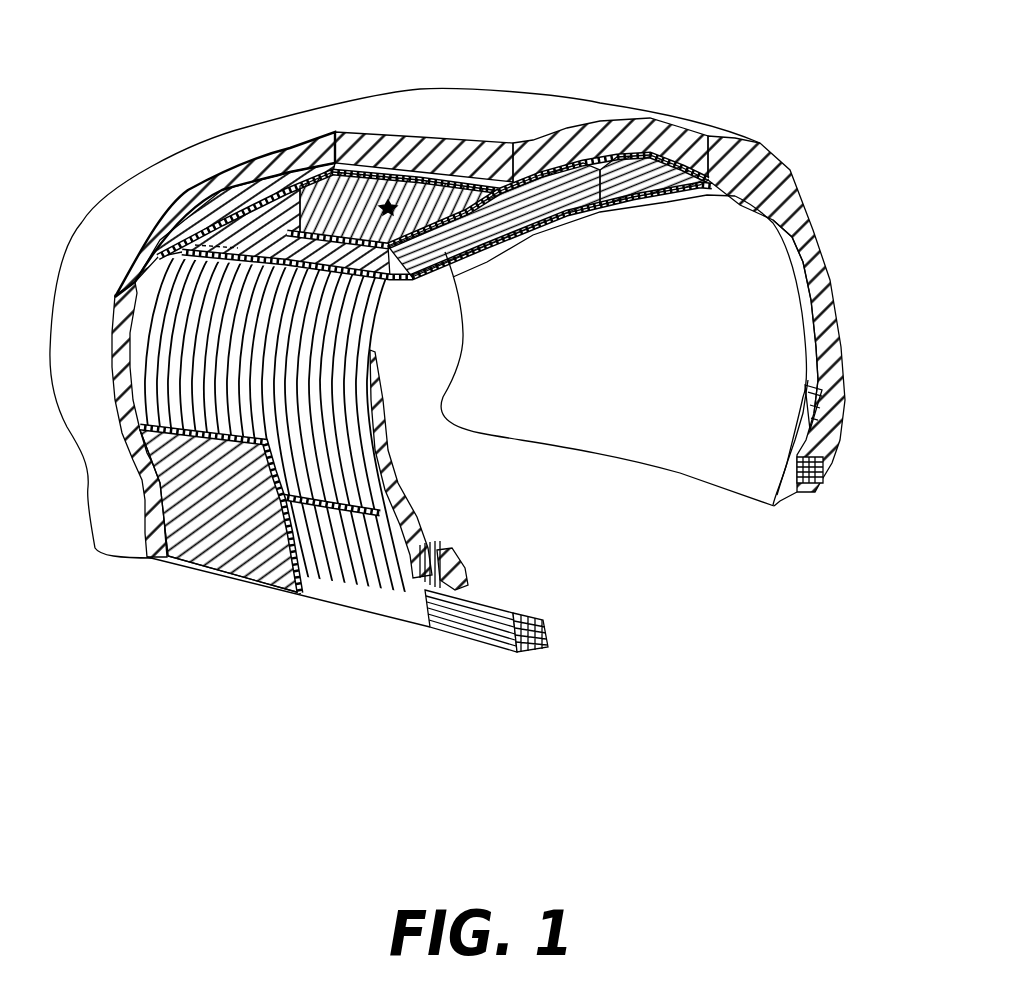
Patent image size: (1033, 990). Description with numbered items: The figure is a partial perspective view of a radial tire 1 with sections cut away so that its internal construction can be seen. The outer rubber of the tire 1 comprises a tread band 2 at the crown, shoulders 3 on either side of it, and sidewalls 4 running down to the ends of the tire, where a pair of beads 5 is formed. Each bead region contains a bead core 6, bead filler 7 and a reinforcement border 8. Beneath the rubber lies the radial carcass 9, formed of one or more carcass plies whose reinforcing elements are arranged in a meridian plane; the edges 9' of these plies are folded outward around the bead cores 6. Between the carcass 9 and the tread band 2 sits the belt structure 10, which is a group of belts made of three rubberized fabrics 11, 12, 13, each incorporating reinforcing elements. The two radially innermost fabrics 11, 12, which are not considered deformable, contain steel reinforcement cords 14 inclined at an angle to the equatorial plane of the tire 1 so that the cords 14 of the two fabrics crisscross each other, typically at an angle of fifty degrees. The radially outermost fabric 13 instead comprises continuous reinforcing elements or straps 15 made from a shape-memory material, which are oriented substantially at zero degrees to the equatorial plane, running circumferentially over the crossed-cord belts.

The tire 1 is at (660, 170).
The tread band 2 is at (557, 110).
The shoulders 3 is at (780, 173).
The sidewalls 4 is at (838, 270).
The beads 5 is at (760, 480).
The bead cores 6 is at (815, 487).
The bead filler 7 is at (850, 375).
The reinforcement borders 8 is at (222, 540).
The radial carcass 9 is at (291, 420).
The edges of the carcass plies 9' is at (504, 520).
The belt structure 10 is at (388, 204).
The first radially innermost fabric 11 is at (533, 200).
The second radially innermost fabric 12 is at (335, 162).
The radially outermost fabric 13 is at (280, 193).
The steel reinforcement cords 14 is at (487, 243).
The reinforcing elements or straps 15 is at (220, 220).